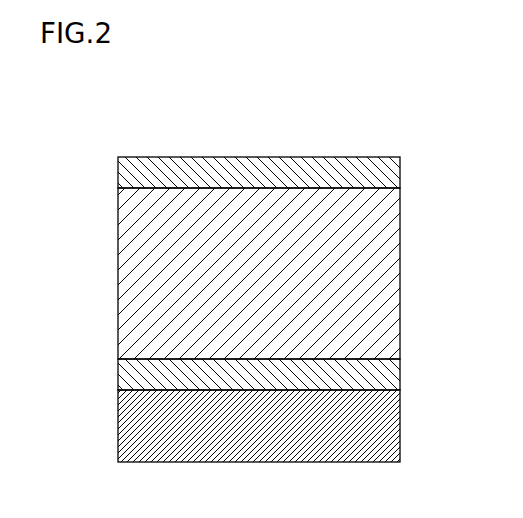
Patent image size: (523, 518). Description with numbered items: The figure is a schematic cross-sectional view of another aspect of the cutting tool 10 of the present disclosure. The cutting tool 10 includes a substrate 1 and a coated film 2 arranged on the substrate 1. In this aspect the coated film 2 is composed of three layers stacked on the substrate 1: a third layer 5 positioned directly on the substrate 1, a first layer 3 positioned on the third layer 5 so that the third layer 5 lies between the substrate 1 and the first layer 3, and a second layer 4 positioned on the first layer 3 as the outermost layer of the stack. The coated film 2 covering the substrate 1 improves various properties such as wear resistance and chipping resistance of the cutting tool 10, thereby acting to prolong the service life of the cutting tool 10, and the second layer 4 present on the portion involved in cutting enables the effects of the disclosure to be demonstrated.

The cutting tool 10 is at (424, 102).
The coated film 2 is at (400, 157).
The second layer 4 is at (387, 173).
The first layer 3 is at (386, 283).
The third layer 5 is at (386, 377).
The substrate 1 is at (383, 432).